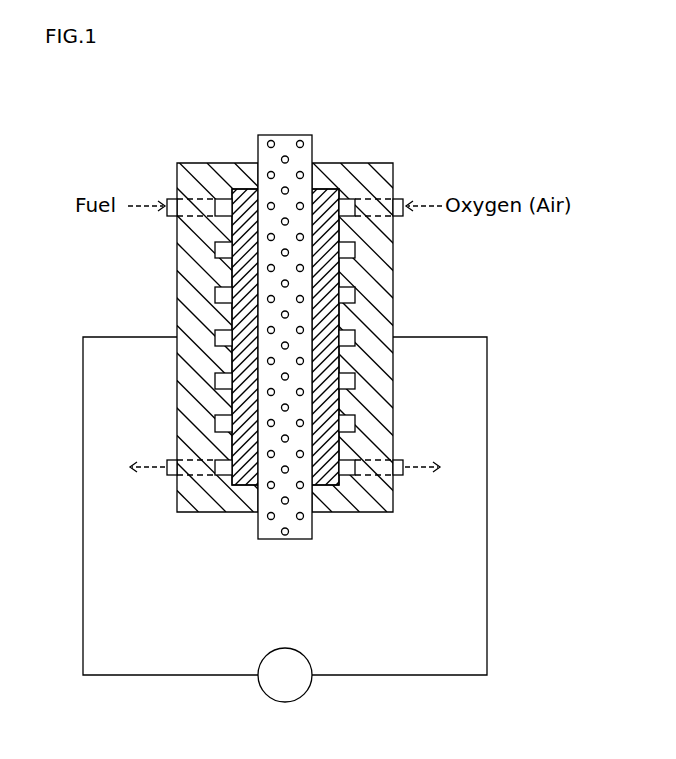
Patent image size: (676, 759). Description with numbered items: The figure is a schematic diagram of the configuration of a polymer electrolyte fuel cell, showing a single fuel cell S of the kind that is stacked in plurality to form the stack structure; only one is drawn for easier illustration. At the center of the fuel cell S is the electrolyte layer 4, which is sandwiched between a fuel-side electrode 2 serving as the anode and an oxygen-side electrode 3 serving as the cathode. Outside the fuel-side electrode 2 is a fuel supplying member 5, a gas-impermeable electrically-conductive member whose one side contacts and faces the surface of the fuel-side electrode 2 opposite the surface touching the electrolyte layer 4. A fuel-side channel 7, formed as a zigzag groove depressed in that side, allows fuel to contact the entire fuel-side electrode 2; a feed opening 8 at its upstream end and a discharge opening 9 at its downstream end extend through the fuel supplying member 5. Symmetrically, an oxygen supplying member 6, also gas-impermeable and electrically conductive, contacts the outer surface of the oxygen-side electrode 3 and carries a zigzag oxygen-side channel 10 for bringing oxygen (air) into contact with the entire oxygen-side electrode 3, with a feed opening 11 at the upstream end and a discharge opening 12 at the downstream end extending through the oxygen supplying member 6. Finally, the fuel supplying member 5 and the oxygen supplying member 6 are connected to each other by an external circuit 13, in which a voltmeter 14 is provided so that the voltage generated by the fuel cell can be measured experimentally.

The fuel cell S is at (411, 110).
The fuel-side electrode 2 is at (237, 189).
The oxygen-side electrode 3 is at (339, 189).
The electrolyte layer 4 is at (285, 135).
The fuel supplying member 5 is at (223, 513).
The oxygen supplying member 6 is at (353, 513).
The fuel-side channel 7 is at (218, 300).
The feed opening 8 is at (167, 199).
The discharge opening 9 is at (167, 468).
The oxygen-side channel 10 is at (352, 300).
The feed opening 11 is at (403, 199).
The discharge opening 12 is at (403, 468).
The external circuit 13 is at (487, 502).
The voltmeter 14 is at (307, 688).